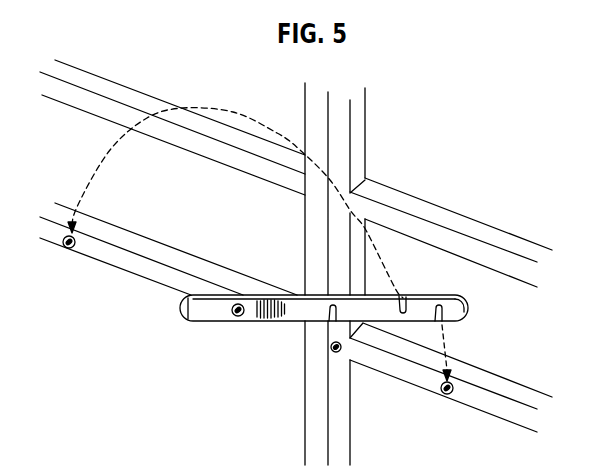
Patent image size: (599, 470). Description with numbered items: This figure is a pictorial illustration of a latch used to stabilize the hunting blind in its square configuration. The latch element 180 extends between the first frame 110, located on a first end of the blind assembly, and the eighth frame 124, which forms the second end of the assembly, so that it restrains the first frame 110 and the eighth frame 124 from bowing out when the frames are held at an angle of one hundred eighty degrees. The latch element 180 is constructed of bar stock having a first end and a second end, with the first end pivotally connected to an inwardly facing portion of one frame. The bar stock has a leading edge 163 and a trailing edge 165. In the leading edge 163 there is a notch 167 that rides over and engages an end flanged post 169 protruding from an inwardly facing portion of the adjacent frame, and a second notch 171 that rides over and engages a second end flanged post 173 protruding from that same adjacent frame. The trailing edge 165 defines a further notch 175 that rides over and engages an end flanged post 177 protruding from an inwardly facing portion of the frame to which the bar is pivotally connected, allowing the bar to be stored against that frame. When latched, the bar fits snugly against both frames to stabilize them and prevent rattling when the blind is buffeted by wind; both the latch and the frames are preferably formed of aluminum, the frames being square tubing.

The first frame 110 is at (144, 247).
The eighth frame 124 is at (507, 240).
The leading edge 163 is at (413, 322).
The trailing edge 165 is at (432, 294).
The notch 167 is at (442, 312).
The end flanged post 169 is at (446, 394).
The second notch 171 is at (331, 314).
The second end flanged post 173 is at (332, 350).
The notch 175 is at (405, 300).
The end flanged post 177 is at (67, 250).
The latch element 180 is at (215, 312).